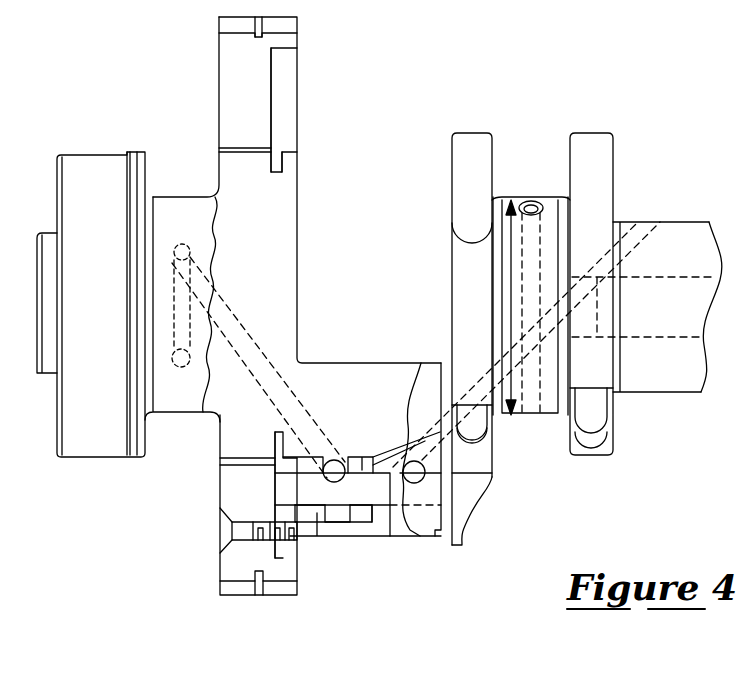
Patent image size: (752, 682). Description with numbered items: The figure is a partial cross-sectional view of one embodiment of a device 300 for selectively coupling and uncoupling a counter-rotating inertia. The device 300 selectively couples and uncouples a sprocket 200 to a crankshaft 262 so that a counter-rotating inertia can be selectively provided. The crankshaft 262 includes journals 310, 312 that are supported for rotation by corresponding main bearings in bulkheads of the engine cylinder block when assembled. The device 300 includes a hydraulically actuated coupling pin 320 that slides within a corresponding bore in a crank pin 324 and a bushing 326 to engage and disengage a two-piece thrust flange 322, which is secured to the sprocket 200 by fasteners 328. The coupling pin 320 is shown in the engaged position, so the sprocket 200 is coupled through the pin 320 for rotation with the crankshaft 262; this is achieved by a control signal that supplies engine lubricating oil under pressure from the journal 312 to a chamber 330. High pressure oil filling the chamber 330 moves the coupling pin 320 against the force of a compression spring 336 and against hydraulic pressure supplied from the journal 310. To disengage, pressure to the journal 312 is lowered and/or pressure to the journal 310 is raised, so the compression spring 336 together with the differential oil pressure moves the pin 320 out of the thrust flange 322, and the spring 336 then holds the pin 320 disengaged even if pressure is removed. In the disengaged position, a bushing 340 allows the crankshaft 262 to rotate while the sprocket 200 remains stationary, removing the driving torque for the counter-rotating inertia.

The sprocket 200 is at (232, 43).
The crankshaft 262 is at (112, 250).
The device 300 is at (313, 558).
The journal 310 is at (180, 413).
The journal 312 is at (546, 414).
The coupling pin 320 is at (362, 497).
The two-piece thrust flange 322 is at (284, 104).
The crank pin 324 is at (343, 362).
The bushing 326 is at (310, 524).
The fasteners 328 is at (232, 531).
The chamber 330 is at (362, 470).
The compression spring 336 is at (323, 517).
The bushing 340 is at (219, 148).